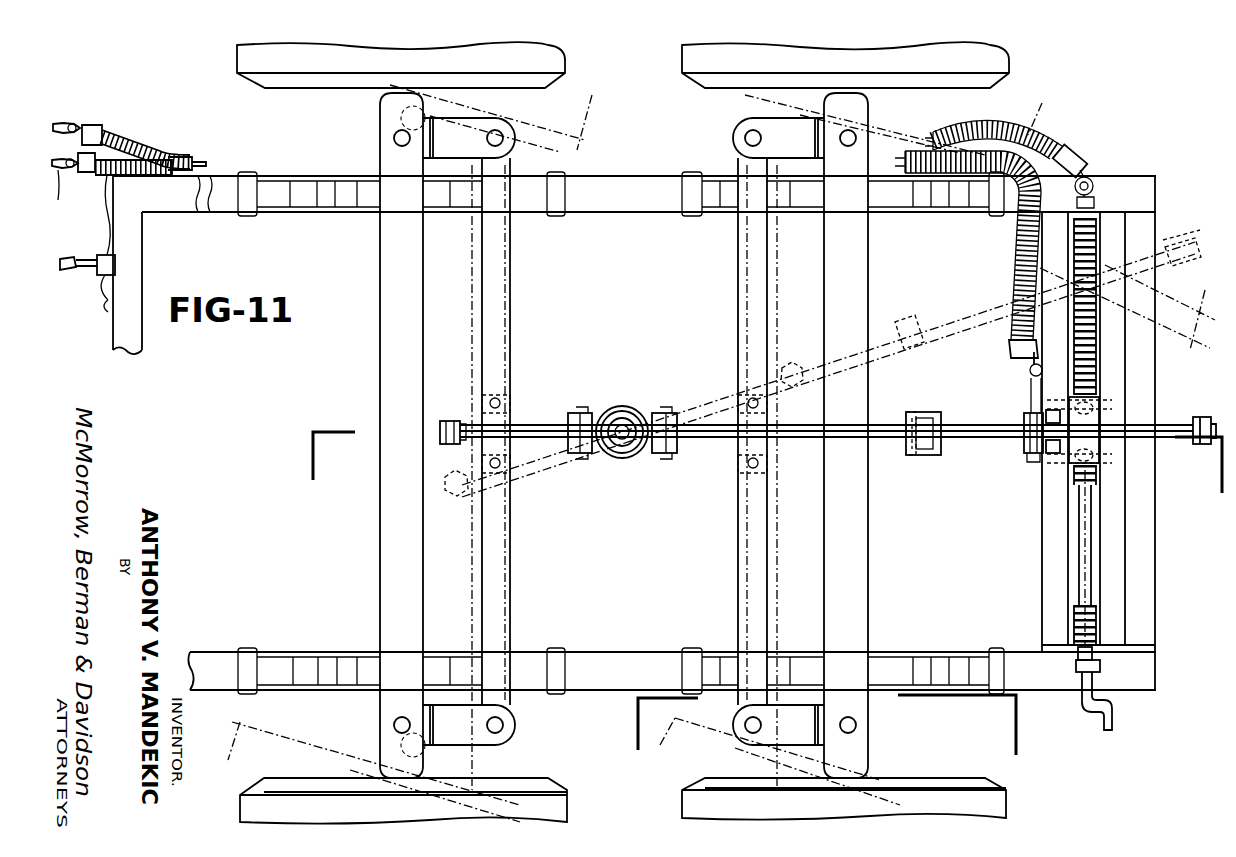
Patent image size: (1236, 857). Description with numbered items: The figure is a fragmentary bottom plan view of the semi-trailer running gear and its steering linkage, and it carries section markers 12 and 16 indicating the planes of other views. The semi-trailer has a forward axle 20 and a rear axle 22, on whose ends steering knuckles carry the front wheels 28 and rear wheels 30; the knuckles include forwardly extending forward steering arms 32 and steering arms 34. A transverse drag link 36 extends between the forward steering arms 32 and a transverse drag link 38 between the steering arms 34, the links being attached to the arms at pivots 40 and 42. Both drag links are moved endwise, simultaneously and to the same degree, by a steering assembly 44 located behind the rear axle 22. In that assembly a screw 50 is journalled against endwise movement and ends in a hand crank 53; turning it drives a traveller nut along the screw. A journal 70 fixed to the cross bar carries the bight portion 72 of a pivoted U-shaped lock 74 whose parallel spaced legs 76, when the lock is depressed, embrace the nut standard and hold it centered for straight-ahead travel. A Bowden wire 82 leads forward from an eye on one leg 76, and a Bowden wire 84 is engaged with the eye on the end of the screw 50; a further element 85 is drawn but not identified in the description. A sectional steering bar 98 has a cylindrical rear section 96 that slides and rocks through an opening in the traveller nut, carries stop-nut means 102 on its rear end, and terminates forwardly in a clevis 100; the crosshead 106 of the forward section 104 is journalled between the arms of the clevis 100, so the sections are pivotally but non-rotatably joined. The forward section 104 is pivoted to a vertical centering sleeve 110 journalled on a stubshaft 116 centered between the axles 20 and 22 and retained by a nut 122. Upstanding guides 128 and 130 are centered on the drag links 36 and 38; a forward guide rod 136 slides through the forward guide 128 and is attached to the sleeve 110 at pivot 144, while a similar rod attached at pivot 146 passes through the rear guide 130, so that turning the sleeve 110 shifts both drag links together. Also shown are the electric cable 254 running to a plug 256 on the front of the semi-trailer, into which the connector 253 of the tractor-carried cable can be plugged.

The section line 12- 12 is at (767, 476).
The section line 16- 16 is at (825, 725).
The forward axle 20 is at (380, 393).
The rear axle 22 is at (868, 526).
The front wheels 28 is at (291, 97).
The rear wheels 30 is at (1020, 62).
The forward steering arms 32 is at (390, 112).
The steering arms 34 is at (868, 124).
The transverse drag link 36 is at (500, 543).
The transverse drag link 38 is at (745, 546).
The pivot 40 is at (508, 145).
The pivot 42 is at (745, 139).
The steering assembly 44 is at (1116, 544).
The screw 50 is at (1090, 612).
The hand crank 53 is at (1115, 720).
The journal 70 is at (1024, 448).
The bight portion 72 is at (1030, 462).
The U-shaped lock 74 is at (1100, 440).
The legs 76 is at (1096, 400).
The Bowden wire 82 is at (1003, 272).
The Bowden wire 84 is at (1066, 133).
The wire 85 is at (83, 212).
The rear section 96 is at (975, 416).
The sectional steering bar 98 is at (932, 315).
The clevis 100 is at (930, 457).
The stop-nut means 102 is at (1203, 417).
The forward section 104 is at (765, 448).
The crosshead 106 is at (905, 448).
The centering sleeve 110 is at (622, 406).
The stubshaft 116 is at (603, 455).
The nut 122 is at (624, 446).
The forward guide 128 is at (510, 412).
The rear guide 130 is at (745, 458).
The forward guide rod 136 is at (545, 450).
The pivot 144 is at (583, 456).
The pivot 146 is at (666, 413).
The connector 253 is at (96, 258).
The electric cable 254 is at (1025, 405).
The plug 256 is at (105, 296).